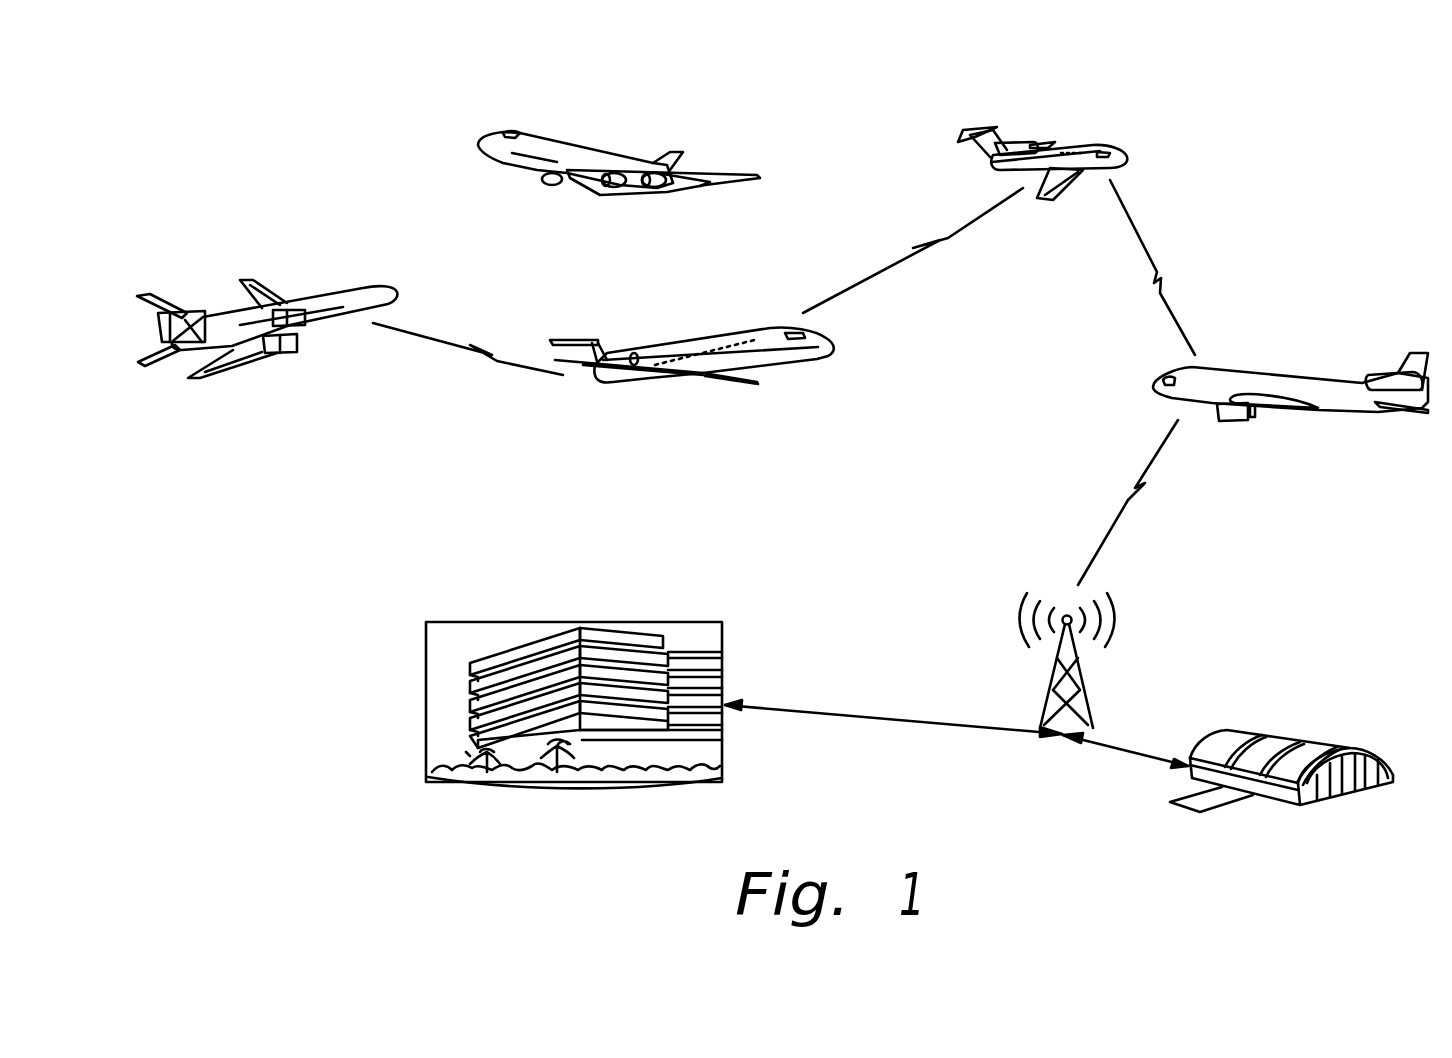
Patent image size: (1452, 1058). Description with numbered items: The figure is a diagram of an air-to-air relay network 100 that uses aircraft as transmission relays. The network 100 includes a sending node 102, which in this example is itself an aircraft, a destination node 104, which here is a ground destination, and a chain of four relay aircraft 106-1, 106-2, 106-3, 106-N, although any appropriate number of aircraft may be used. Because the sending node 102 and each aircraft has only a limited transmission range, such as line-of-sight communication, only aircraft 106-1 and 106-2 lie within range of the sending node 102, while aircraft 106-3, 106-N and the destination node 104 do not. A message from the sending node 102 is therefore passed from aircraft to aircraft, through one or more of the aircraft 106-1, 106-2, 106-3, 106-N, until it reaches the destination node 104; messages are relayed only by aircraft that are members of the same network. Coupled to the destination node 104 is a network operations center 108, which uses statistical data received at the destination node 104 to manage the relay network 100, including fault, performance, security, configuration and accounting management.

The air-to-air relay network 100 is at (1294, 131).
The sending node 102 is at (250, 282).
The destination node 104 is at (1248, 729).
The aircraft 106-1 is at (588, 124).
The aircraft 106-2 is at (797, 367).
The aircraft 106-3 is at (1124, 124).
The aircraft 106-N is at (1283, 412).
The network operations center 108 is at (492, 620).